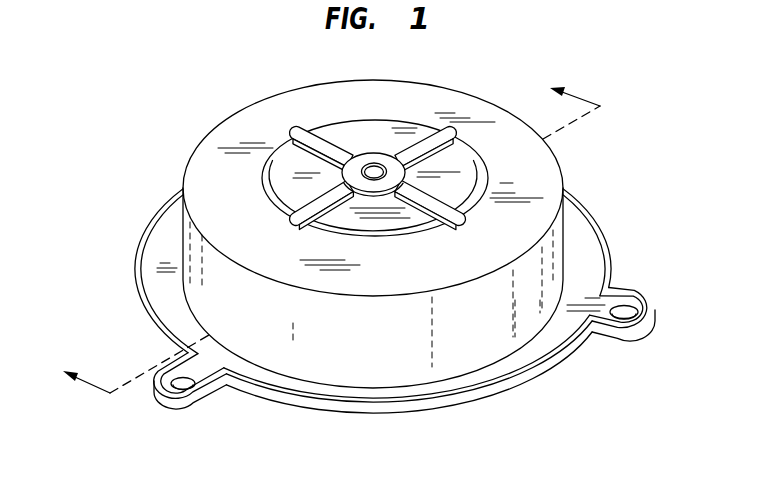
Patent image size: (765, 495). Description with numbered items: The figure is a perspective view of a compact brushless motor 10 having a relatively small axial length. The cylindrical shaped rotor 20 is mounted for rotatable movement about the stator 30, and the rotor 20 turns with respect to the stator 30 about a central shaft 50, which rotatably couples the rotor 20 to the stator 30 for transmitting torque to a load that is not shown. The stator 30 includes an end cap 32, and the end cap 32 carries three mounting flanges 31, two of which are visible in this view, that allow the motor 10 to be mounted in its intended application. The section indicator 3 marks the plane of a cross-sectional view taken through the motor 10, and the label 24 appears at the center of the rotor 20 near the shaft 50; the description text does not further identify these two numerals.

The brushless motor 10 is at (163, 132).
The section line 3- 3 is at (321, 231).
The rotor 20 is at (203, 291).
The central hub aperture 24 is at (381, 165).
The stator 30 is at (492, 400).
The mounting flanges 31 is at (200, 404).
The end cap 32 is at (381, 414).
The central shaft 50 is at (366, 167).